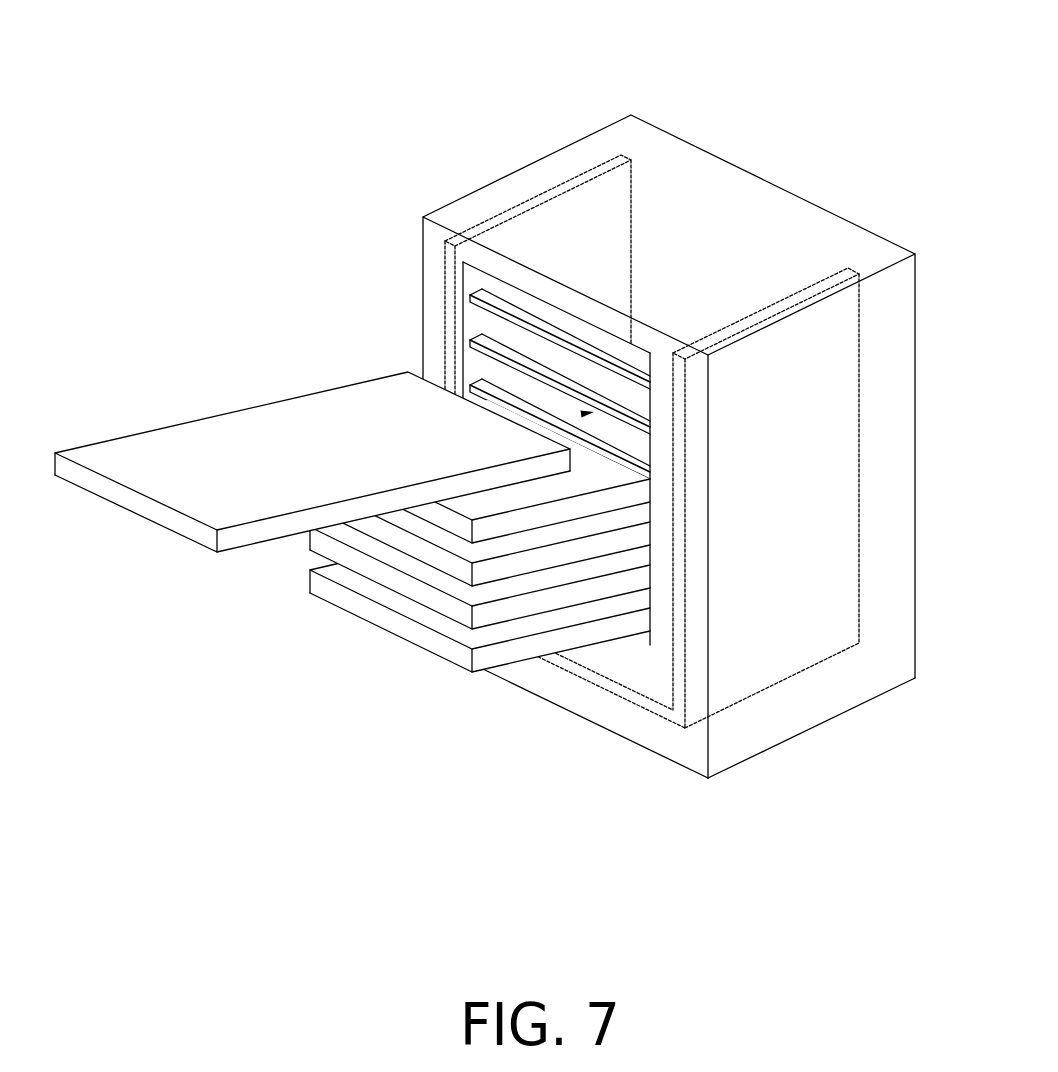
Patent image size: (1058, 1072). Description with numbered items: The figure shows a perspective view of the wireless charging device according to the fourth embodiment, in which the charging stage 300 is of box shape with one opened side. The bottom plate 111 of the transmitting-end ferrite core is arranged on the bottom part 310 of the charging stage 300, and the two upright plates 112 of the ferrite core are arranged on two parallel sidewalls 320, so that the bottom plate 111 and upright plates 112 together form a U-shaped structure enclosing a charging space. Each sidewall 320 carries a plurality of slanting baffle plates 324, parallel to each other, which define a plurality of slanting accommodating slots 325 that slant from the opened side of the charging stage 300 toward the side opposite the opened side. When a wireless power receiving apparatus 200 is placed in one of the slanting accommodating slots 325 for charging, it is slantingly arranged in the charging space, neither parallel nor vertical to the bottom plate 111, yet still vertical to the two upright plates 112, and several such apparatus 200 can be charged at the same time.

The charging stage 300 is at (487, 107).
The bottom part 310 is at (552, 688).
The sidewall 320 is at (438, 293).
The upright plate 112 is at (555, 198).
The bottom plate 111 is at (635, 693).
The slanting baffle plate 324 is at (512, 383).
The slanting accommodating slot 325 is at (583, 413).
The wireless power receiving apparatus 200 is at (470, 681).